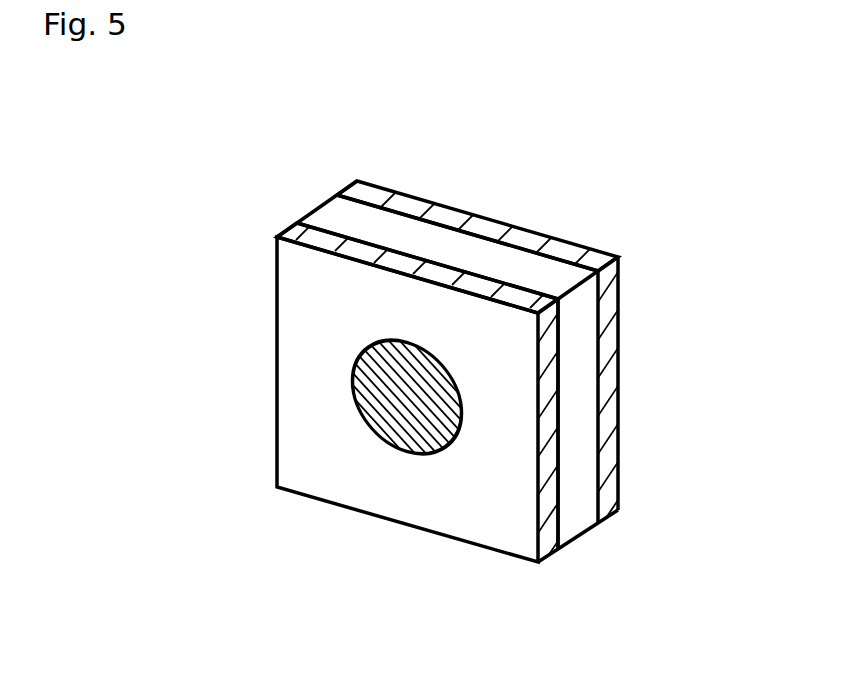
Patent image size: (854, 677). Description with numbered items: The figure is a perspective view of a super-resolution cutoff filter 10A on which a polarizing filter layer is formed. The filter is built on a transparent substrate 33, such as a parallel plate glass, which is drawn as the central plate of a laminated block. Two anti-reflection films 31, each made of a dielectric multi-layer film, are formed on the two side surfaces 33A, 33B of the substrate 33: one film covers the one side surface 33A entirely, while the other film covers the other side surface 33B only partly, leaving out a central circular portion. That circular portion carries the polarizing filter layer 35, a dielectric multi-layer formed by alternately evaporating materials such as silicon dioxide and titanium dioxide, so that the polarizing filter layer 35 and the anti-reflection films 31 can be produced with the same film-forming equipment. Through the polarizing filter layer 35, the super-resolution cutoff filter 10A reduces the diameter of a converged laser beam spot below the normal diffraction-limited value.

The super-resolution cutoff filter 10A is at (491, 208).
The anti-reflection film 31 is at (302, 337).
The transparent substrate 33 is at (562, 273).
The one side surface 33A is at (350, 185).
The other side surface 33B is at (290, 227).
The polarizing filter layer 35 is at (378, 396).